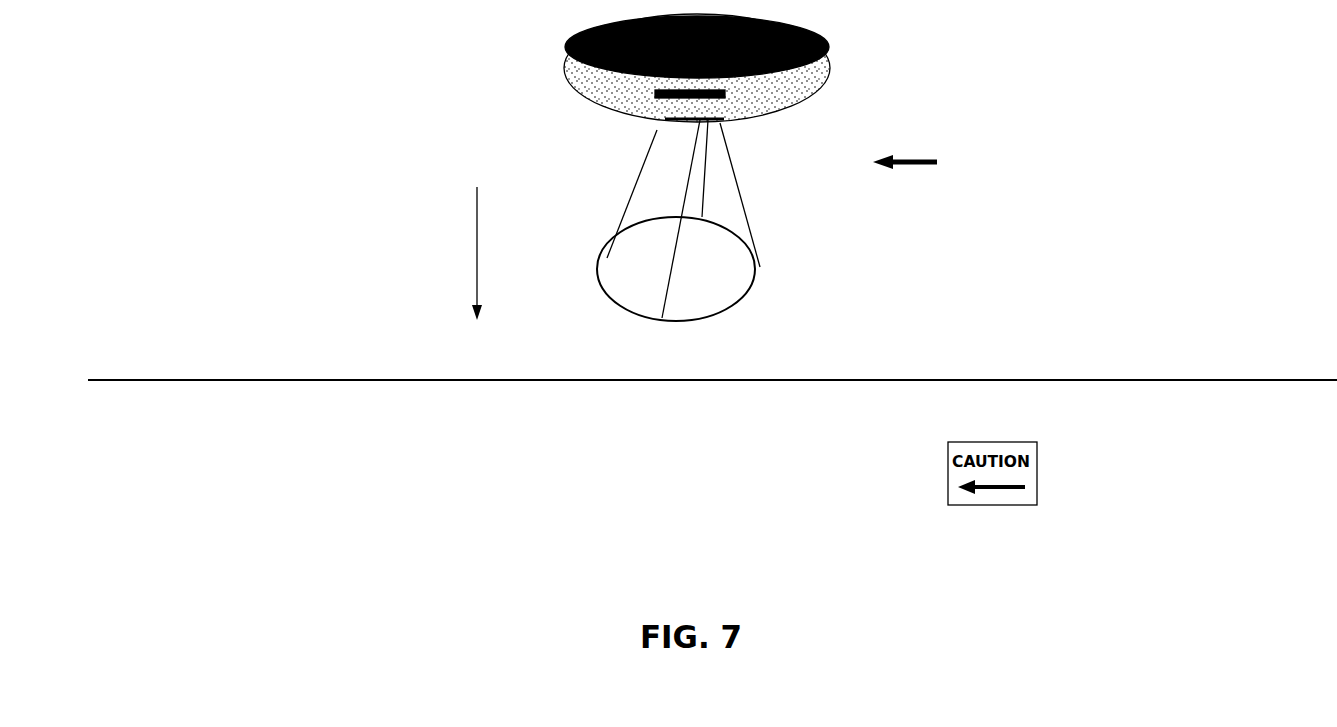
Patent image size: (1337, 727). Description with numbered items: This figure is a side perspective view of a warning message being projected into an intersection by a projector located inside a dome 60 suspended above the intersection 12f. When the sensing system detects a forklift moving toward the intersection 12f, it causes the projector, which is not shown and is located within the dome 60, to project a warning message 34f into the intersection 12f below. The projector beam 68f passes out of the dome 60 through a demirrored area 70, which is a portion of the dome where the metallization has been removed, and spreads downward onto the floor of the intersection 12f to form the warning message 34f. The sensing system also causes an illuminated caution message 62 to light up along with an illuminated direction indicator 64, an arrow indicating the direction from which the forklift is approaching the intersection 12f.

The dome 60 is at (830, 66).
The illuminated caution message 62 is at (725, 97).
The illuminated direction indicator 64 is at (937, 154).
The demirrored area 70 is at (655, 117).
The projector beam 68f is at (738, 205).
The warning message 34f is at (738, 293).
The intersection 12f is at (469, 244).